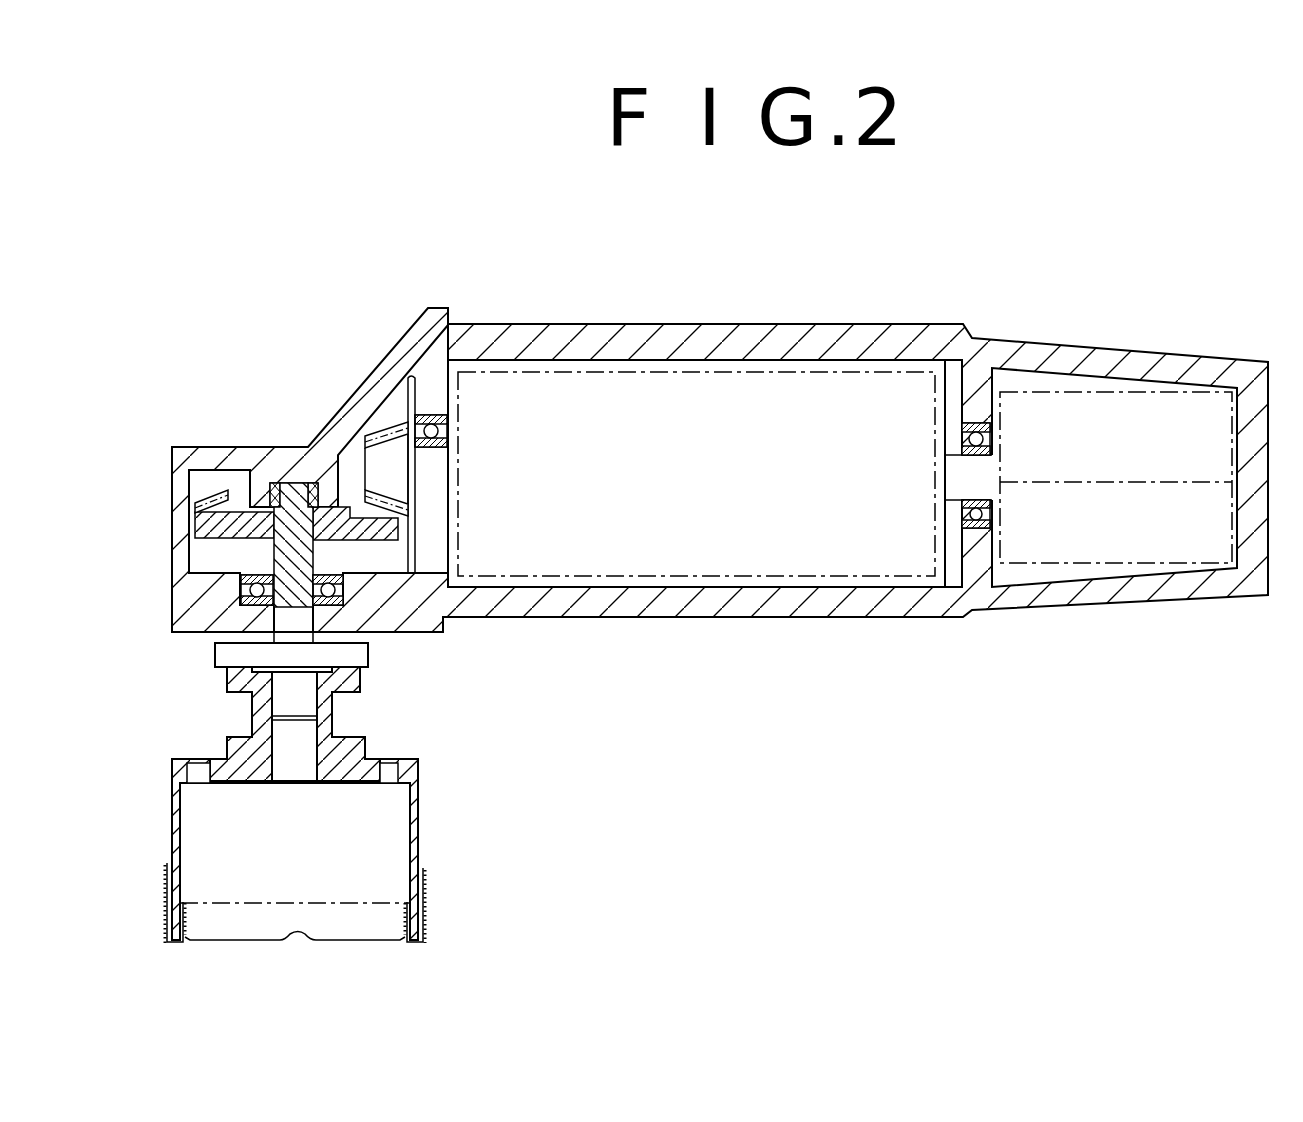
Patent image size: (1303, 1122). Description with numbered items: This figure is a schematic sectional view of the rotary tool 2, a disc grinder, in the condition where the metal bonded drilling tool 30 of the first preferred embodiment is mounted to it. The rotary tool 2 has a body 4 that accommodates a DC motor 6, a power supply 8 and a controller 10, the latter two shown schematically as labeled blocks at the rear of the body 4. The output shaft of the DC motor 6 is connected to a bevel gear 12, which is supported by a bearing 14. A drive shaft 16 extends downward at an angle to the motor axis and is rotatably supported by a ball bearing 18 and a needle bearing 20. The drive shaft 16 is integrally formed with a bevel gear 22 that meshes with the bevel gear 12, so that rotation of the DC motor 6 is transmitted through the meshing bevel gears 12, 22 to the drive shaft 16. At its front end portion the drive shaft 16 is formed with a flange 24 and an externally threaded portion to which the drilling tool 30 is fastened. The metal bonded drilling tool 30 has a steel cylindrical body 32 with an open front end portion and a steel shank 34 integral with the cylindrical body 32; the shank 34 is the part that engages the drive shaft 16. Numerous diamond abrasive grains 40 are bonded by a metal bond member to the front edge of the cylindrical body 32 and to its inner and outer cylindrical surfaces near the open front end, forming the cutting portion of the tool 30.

The rotary tool 2 is at (793, 312).
The body 4 is at (668, 338).
The DC motor 6 is at (692, 590).
The power supply 8 is at (1108, 388).
The controller 10 is at (1112, 570).
The bevel gear 12 is at (382, 434).
The bearing 14 is at (447, 436).
The drive shaft 16 is at (257, 553).
The ball bearing 18 is at (240, 588).
The needle bearing 20 is at (275, 485).
The bevel gear 22 is at (212, 498).
The flange 24 is at (365, 655).
The metal bonded drilling tool 30 is at (423, 810).
The cylindrical body 32 is at (418, 847).
The shank 34 is at (228, 736).
The diamond abrasive grains 40 is at (423, 912).